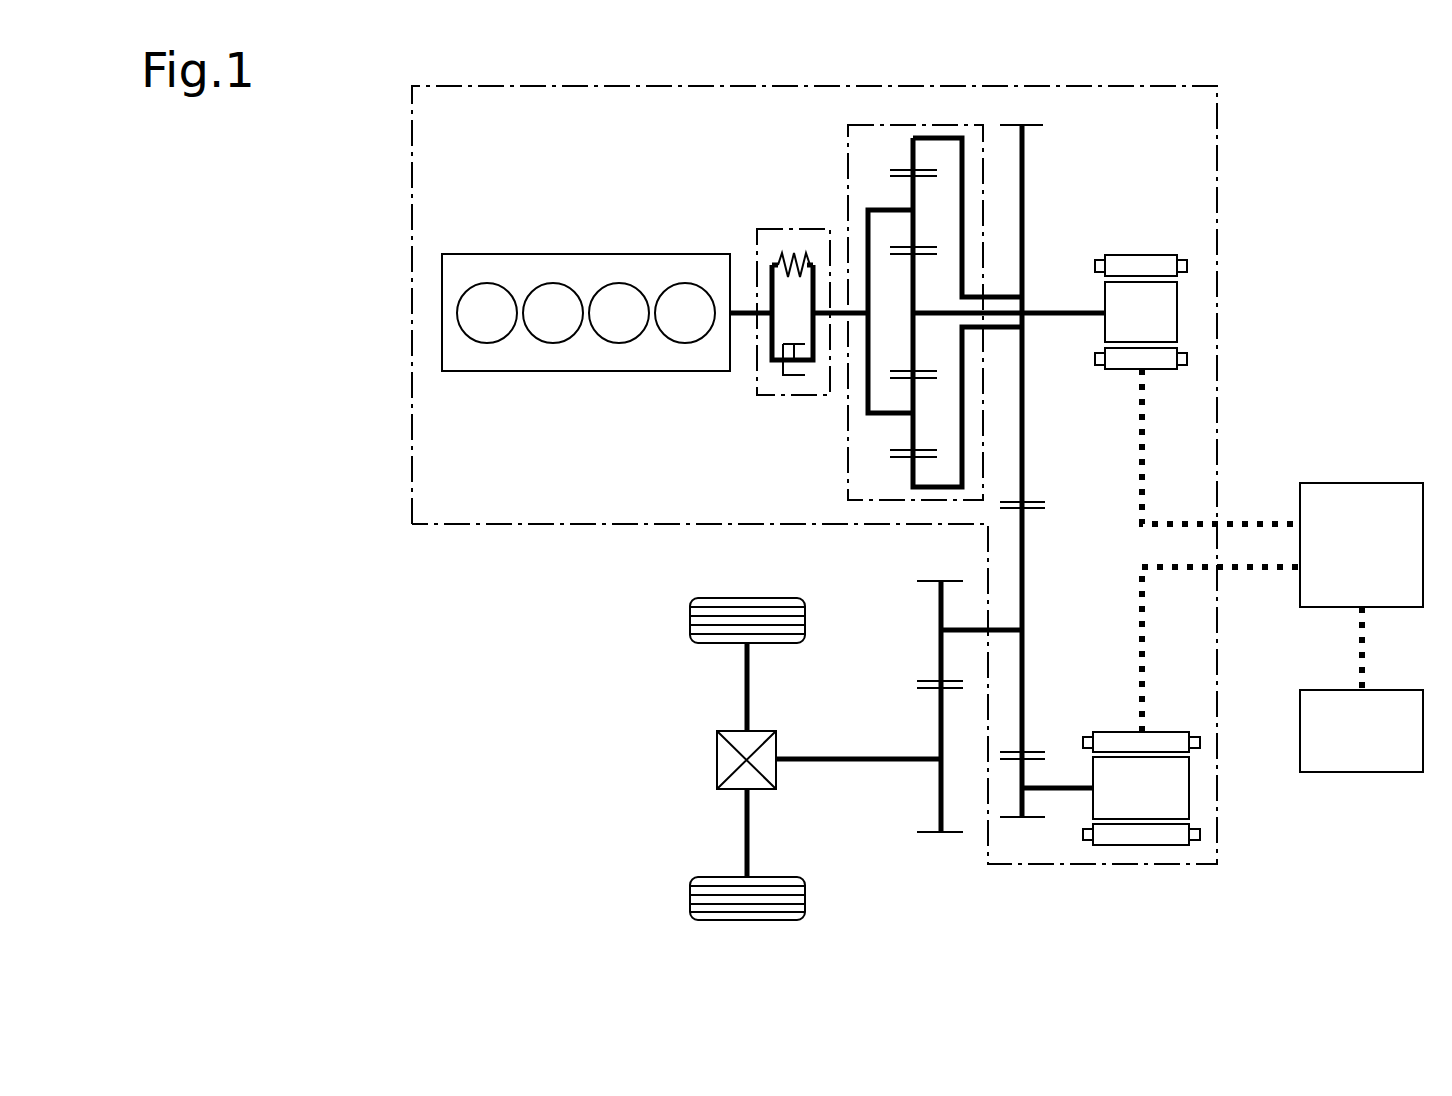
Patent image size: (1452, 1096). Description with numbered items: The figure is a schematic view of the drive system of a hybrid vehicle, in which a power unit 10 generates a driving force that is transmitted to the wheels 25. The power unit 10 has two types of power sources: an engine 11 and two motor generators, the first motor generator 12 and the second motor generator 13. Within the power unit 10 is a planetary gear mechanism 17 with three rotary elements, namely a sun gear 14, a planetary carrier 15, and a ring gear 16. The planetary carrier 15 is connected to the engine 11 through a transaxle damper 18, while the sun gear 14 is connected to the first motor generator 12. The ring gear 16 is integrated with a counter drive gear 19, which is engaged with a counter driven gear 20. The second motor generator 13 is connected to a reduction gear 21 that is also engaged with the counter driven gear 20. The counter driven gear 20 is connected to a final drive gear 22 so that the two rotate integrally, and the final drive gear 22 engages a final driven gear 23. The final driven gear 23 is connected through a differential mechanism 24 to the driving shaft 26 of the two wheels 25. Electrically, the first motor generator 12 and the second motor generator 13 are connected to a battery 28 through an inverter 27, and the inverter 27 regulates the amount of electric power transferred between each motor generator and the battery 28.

The power unit 10 is at (412, 256).
The engine 11 is at (635, 253).
The first motor generator 12 is at (1177, 313).
The second motor generator 13 is at (1189, 788).
The sun gear 14 is at (912, 335).
The planetary carrier 15 is at (887, 208).
The ring gear 16 is at (913, 474).
The planetary gear mechanism 17 is at (848, 171).
The transaxle damper 18 is at (793, 395).
The counter drive gear 19 is at (1022, 476).
The counter driven gear 20 is at (1035, 528).
The reduction gear 21 is at (1022, 774).
The final drive gear 22 is at (941, 591).
The final driven gear 23 is at (941, 700).
The differential mechanism 24 is at (717, 762).
The wheels 25 is at (690, 616).
The driving shaft 26 is at (750, 686).
The inverter 27 is at (1300, 497).
The battery 28 is at (1300, 714).